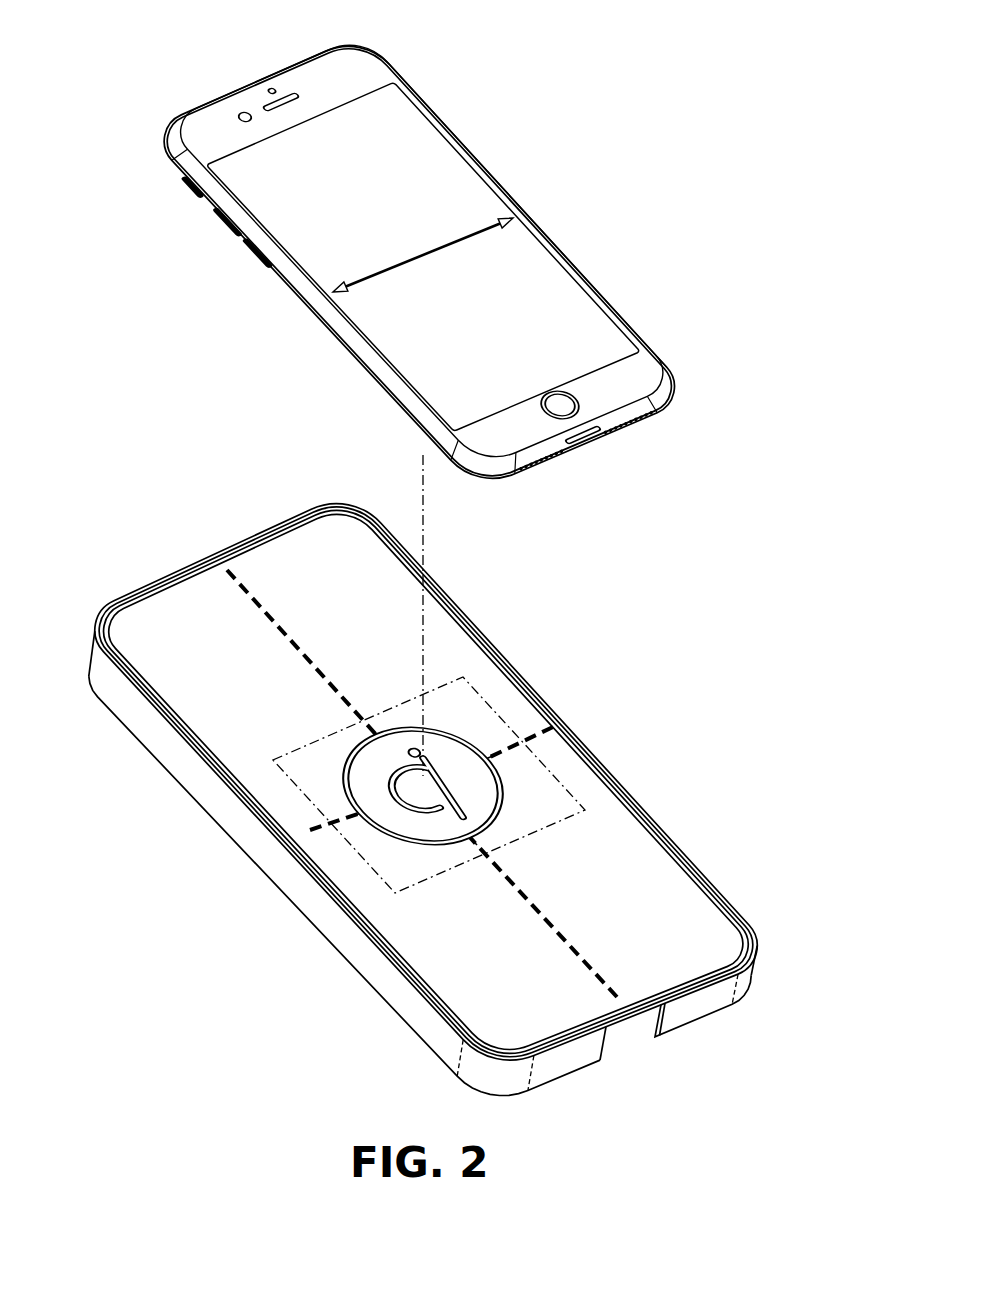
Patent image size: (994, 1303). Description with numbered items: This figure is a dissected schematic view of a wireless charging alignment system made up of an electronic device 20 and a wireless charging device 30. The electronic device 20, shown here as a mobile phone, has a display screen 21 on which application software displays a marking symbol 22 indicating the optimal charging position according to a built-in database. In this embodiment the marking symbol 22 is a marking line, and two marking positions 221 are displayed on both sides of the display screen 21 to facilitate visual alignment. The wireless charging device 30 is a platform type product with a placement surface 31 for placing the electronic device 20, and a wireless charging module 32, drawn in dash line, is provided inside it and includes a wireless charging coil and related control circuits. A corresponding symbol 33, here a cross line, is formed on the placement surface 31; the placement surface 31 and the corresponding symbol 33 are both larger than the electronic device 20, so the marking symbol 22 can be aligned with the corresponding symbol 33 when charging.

The electronic device 20 is at (212, 137).
The display screen 21 is at (375, 147).
The marking symbol 22 is at (425, 256).
The marking positions 221 is at (523, 203).
The wireless charging device 30 is at (363, 953).
The placement surface 31 is at (627, 860).
The wireless charging module 32 is at (490, 700).
The corresponding symbol 33 is at (275, 618).